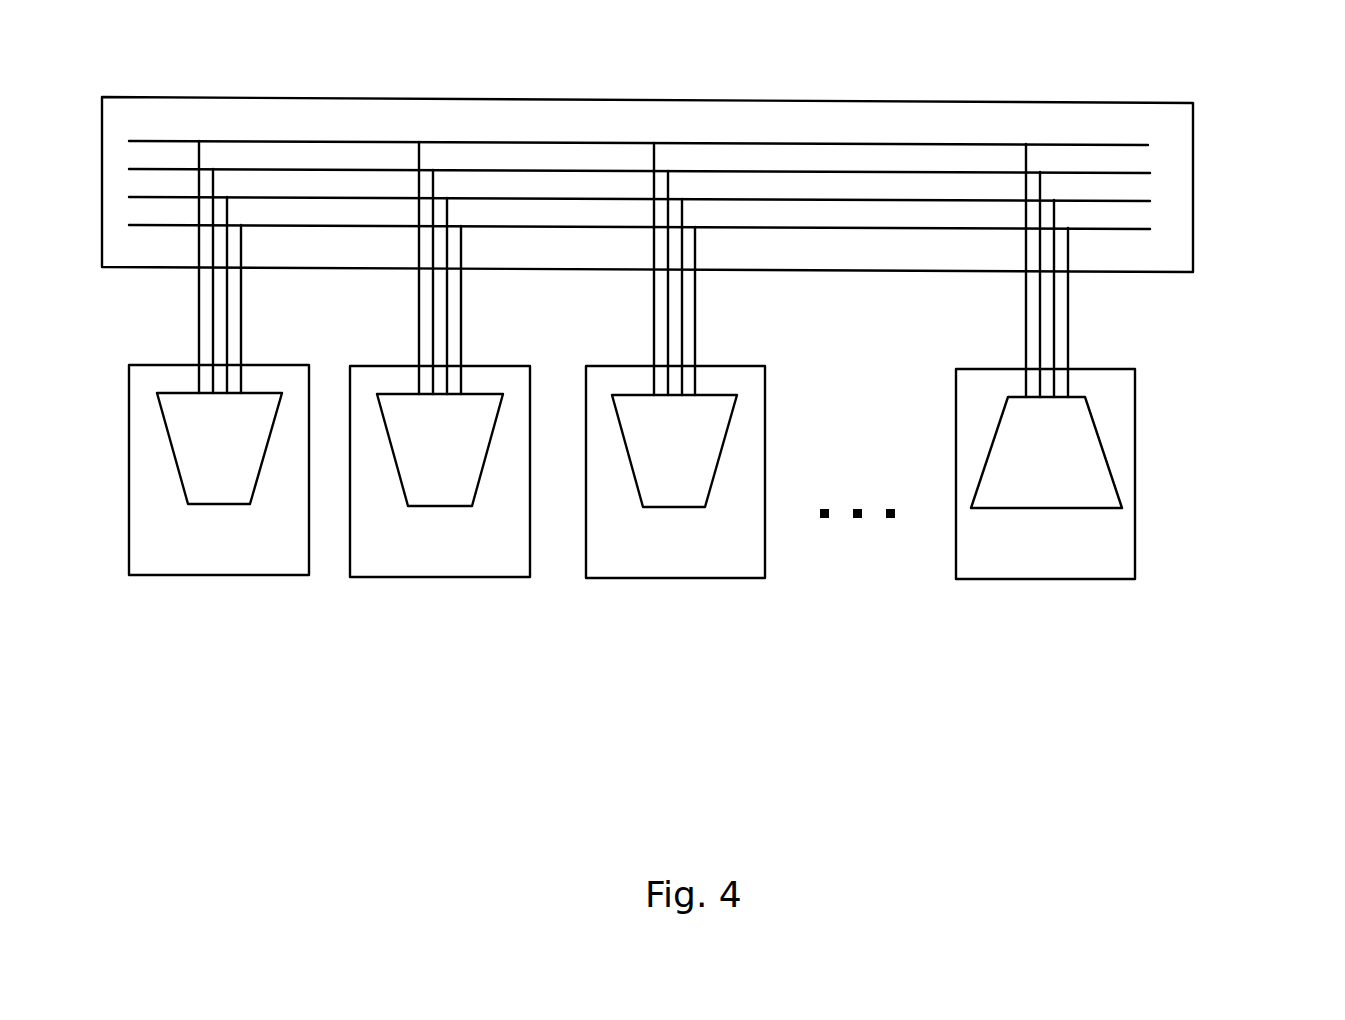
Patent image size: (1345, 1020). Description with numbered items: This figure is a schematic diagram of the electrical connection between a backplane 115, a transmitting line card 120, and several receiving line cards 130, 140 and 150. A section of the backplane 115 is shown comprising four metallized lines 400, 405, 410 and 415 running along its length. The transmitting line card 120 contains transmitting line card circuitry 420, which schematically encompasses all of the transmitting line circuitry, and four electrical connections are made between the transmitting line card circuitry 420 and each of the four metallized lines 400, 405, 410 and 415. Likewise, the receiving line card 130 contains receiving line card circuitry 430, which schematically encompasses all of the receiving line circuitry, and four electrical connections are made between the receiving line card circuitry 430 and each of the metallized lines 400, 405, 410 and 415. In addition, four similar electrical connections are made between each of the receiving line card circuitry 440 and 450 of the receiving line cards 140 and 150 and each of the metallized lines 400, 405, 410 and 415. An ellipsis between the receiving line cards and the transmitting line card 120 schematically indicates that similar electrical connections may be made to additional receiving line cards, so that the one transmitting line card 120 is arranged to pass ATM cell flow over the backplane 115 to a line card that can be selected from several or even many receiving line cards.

The backplane 115 is at (767, 72).
The metallized line 400 is at (1148, 146).
The metallized line 405 is at (1155, 176).
The metallized line 410 is at (1162, 201).
The metallized line 415 is at (1157, 238).
The receiving line card 130 is at (148, 577).
The receiving line card 140 is at (378, 577).
The receiving line card 150 is at (612, 578).
The transmitting line card 120 is at (998, 579).
The receiving line card circuitry 430 is at (228, 467).
The receiving line card circuitry 440 is at (460, 449).
The receiving line card circuitry 450 is at (682, 465).
The transmitting line card circuitry 420 is at (1067, 467).